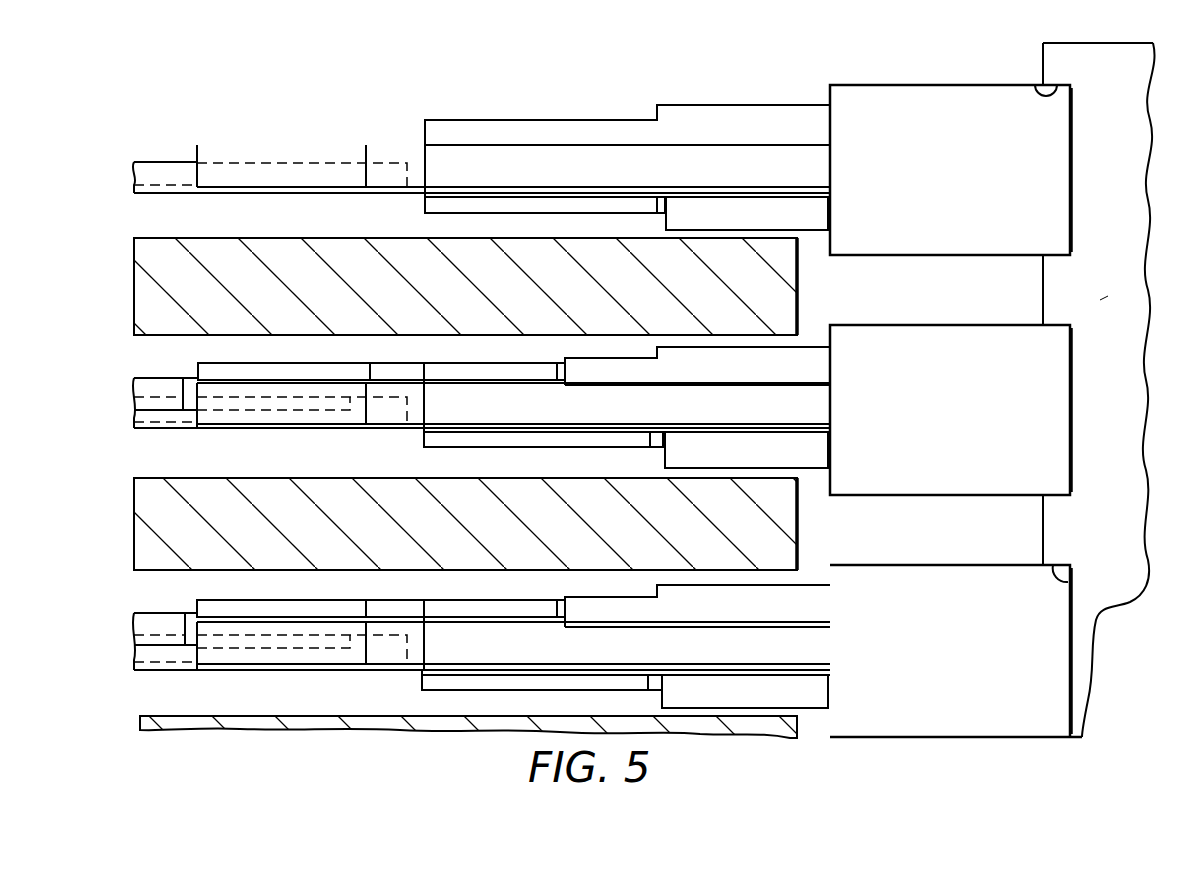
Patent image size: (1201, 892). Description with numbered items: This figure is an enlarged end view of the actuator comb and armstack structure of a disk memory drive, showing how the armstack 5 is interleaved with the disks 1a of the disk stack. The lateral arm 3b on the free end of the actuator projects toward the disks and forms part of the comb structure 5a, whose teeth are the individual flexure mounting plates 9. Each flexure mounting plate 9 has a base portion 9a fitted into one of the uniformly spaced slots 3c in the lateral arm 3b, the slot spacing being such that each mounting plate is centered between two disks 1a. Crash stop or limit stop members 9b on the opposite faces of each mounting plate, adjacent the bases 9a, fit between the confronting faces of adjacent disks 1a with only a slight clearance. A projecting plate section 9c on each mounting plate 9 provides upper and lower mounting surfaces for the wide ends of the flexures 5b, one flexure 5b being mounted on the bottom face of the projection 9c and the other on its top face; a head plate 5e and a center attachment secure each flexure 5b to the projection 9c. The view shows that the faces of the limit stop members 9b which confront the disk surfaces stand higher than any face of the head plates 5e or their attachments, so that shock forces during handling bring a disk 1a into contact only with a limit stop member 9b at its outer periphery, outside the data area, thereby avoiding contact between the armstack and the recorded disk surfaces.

The armstack 5 is at (818, 90).
The comb structure 5a is at (1114, 298).
The flexure 5b is at (164, 195).
The head plate 5e is at (446, 204).
The flexure mounting plate 9 is at (968, 178).
The base portion 9a is at (1062, 186).
The limit stop member 9b is at (745, 108).
The projecting plate section 9c is at (424, 170).
The disk 1a is at (798, 285).
The lateral arm 3b is at (1140, 352).
The slot 3c is at (1040, 92).